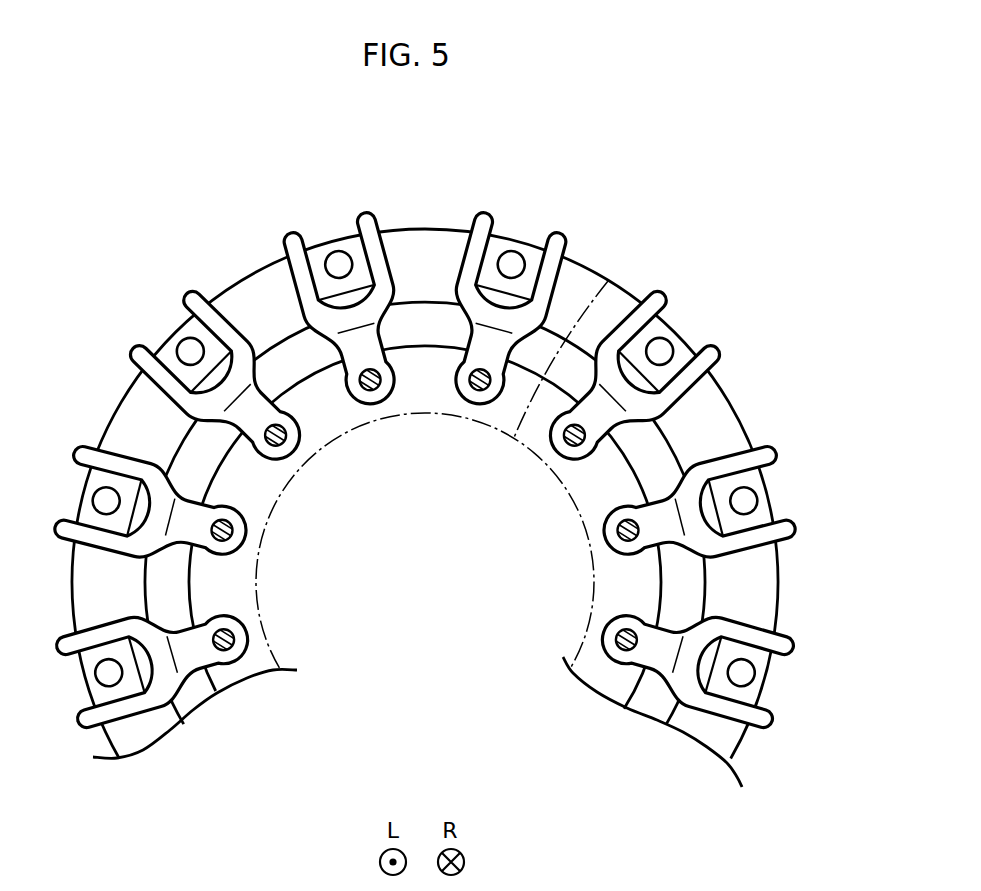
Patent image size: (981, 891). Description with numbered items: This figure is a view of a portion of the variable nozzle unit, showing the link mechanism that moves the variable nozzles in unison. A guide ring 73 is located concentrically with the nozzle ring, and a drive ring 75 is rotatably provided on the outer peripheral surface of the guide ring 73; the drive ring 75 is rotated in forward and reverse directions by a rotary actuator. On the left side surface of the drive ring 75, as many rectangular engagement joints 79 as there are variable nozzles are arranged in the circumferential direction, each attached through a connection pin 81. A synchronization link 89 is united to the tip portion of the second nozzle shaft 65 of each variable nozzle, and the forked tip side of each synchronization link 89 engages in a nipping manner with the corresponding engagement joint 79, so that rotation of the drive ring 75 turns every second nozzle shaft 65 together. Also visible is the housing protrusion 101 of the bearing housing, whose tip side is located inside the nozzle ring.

The second nozzle shaft 65 is at (371, 392).
The guide ring 73 is at (303, 364).
The drive ring 75 is at (430, 228).
The engagement joint 79 is at (305, 240).
The connection pin 81 is at (333, 255).
The synchronization link 89 is at (363, 218).
The housing protrusion 101 is at (608, 281).